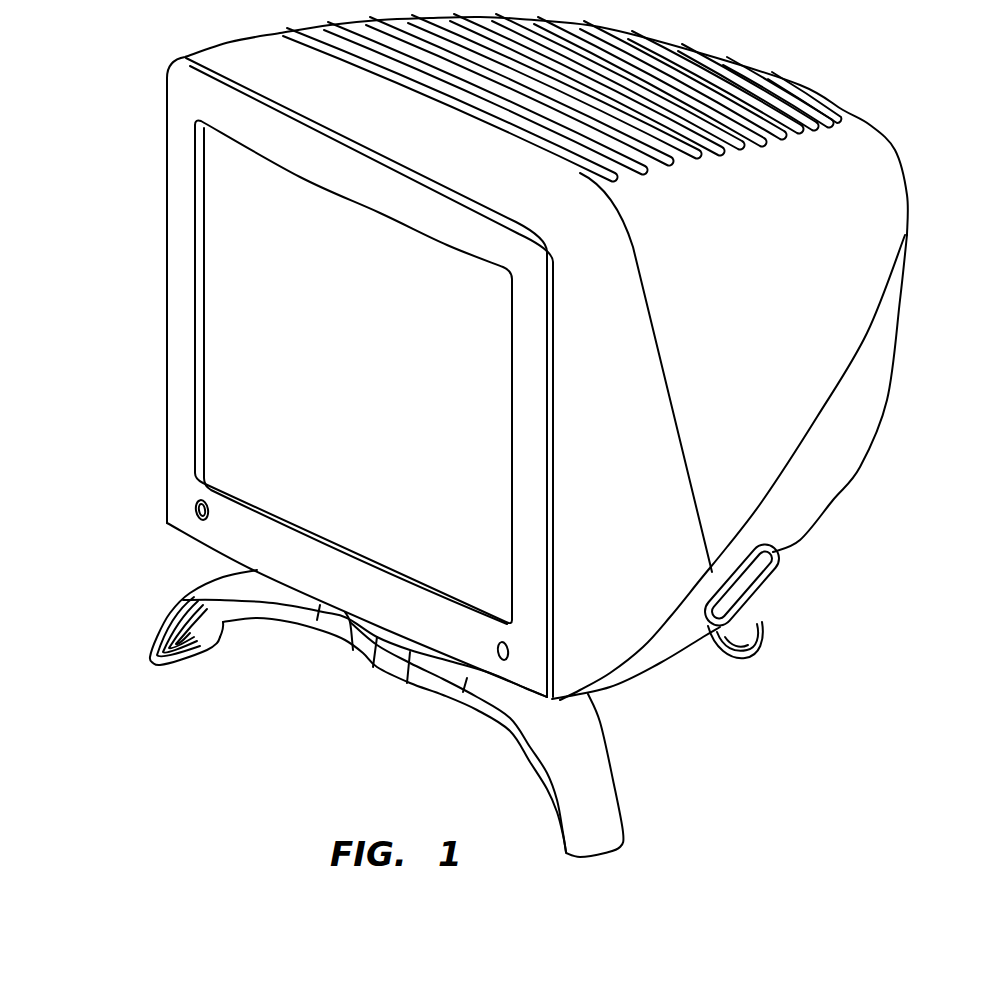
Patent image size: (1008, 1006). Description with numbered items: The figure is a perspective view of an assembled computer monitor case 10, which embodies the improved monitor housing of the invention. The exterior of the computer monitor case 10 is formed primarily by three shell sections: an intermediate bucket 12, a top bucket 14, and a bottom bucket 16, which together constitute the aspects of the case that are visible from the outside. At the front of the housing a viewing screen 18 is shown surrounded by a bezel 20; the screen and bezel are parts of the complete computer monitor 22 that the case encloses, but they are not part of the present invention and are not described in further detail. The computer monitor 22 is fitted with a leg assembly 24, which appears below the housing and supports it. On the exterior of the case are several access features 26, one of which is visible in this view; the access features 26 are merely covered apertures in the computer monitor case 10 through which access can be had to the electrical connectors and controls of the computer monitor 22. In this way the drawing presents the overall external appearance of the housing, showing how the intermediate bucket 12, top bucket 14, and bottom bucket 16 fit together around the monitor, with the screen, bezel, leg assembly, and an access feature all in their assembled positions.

The computer monitor case 10 is at (465, 435).
The intermediate bucket 12 is at (635, 524).
The top bucket 14 is at (749, 328).
The bottom bucket 16 is at (815, 507).
The viewing screen 18 is at (379, 398).
The bezel 20 is at (182, 343).
The computer monitor 22 is at (465, 357).
The leg assembly 24 is at (597, 777).
The access features 26 is at (750, 578).